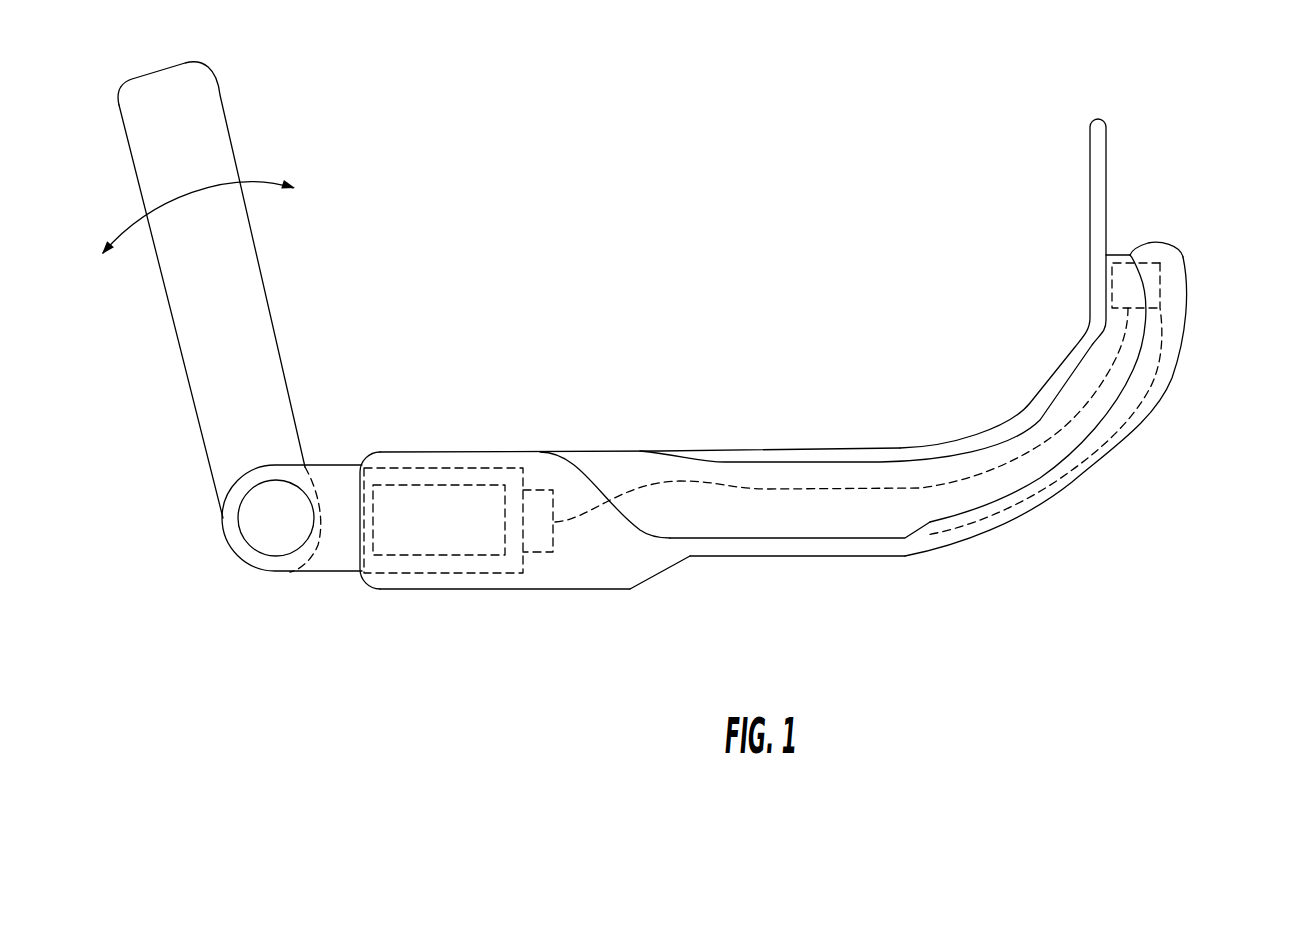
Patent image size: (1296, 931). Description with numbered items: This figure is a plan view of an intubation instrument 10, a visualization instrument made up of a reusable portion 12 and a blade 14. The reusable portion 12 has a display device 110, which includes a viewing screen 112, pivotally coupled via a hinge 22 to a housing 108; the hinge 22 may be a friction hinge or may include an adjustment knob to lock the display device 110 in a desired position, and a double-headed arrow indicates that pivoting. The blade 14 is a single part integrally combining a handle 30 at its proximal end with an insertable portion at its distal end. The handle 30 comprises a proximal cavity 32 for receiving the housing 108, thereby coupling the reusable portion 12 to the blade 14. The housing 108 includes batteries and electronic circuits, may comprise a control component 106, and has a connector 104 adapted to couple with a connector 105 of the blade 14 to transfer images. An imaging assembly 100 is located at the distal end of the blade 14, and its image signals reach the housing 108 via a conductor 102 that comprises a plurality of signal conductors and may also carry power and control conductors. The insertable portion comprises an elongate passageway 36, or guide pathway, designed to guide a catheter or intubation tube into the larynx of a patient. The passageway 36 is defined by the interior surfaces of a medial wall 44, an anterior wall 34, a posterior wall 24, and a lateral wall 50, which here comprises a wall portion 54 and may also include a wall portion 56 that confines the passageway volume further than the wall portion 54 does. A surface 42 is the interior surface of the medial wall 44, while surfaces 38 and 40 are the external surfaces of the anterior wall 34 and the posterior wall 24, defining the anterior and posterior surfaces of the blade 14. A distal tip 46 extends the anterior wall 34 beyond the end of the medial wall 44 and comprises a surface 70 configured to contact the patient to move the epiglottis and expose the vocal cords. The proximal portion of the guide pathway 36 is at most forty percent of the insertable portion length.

The intubation instrument 10 is at (566, 238).
The reusable portion 12 is at (213, 317).
The blade 14 is at (525, 511).
The hinge 22 is at (267, 540).
The posterior wall 24 is at (831, 365).
The handle 30 is at (412, 465).
The proximal cavity 32 is at (440, 572).
The anterior wall 34 is at (737, 445).
The passageway 36 is at (882, 507).
The external surface of anterior wall 38 is at (818, 450).
The external surface of posterior wall 40 is at (910, 558).
The interior surface of medial wall 42 is at (848, 513).
The medial wall 44 is at (1202, 200).
The distal tip 46 is at (1120, 147).
The lateral wall 50 is at (658, 553).
The wall portion 54 is at (1108, 427).
The wall portion 56 is at (1158, 245).
The surface 70 is at (1088, 190).
The imaging assembly 100 is at (1128, 283).
The conductor 102 is at (1117, 357).
The connector 104 is at (581, 434).
The connector 105 is at (533, 500).
The control component 106 is at (453, 503).
The housing 108 is at (337, 487).
The display device 110 is at (213, 128).
The viewing screen 112 is at (175, 340).